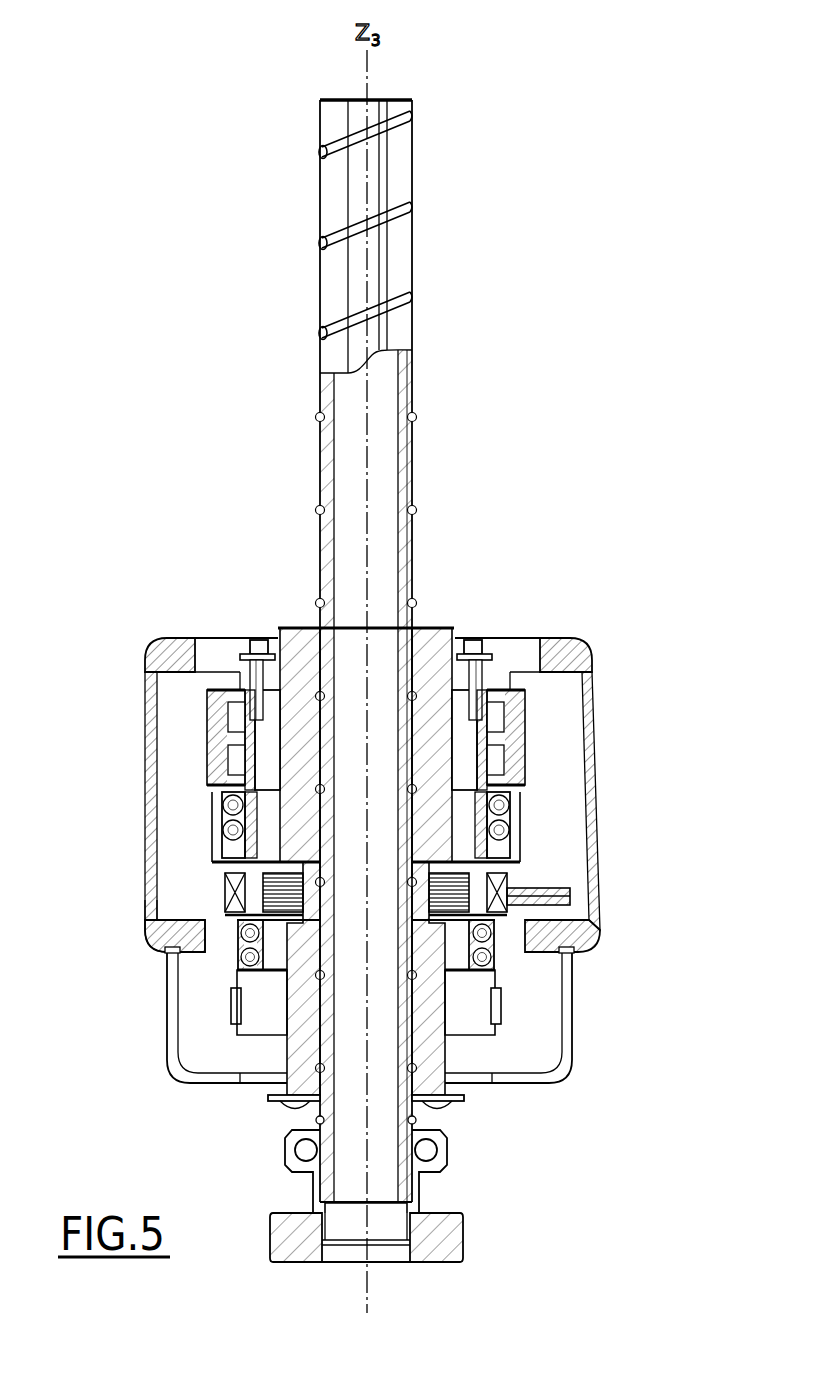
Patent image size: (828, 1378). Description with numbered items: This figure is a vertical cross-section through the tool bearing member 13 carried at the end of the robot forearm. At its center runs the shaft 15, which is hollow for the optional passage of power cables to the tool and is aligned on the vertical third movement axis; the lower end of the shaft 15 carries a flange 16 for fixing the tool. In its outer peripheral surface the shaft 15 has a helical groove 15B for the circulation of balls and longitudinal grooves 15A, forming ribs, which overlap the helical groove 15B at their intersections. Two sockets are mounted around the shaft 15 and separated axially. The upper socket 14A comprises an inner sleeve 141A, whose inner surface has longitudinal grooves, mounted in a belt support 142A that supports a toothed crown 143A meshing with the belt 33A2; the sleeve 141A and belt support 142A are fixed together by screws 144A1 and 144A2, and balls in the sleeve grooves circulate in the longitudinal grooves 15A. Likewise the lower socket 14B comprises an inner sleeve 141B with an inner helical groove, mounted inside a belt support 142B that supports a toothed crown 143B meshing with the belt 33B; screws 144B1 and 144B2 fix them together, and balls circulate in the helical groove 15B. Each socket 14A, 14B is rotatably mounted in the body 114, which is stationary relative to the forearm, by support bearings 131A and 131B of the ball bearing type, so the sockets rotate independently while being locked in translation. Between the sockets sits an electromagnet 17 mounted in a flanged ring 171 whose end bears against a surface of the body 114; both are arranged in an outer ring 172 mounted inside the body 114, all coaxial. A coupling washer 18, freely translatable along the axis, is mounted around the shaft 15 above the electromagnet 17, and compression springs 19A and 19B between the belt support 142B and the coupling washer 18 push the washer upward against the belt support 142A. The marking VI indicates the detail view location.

The tool bearing member 13 is at (467, 550).
The socket 14A is at (267, 829).
The inner sleeve 141A is at (298, 668).
The belt support 142A is at (265, 722).
The screw 144A1 is at (258, 650).
The screw 144A2 is at (482, 650).
The belt 33A2 is at (215, 712).
The toothed crown 143A is at (240, 748).
The elastic member 19A is at (225, 830).
The coupling washer 18 is at (230, 858).
The outer ring 172 is at (222, 880).
The electromagnet 17 is at (262, 893).
The flanged ring 171 is at (207, 928).
The support bearing 131A is at (510, 828).
The elastic member 19B is at (545, 895).
The support bearing 131B is at (500, 945).
The body 114 is at (518, 965).
The section line VI is at (170, 990).
The belt 33B is at (233, 1000).
The toothed crown 143B is at (257, 1020).
The screw 144B1 is at (286, 1102).
The screw 144B2 is at (440, 1103).
The inner sleeve 141B is at (427, 1058).
The belt support 142B is at (455, 1080).
The socket 14B is at (576, 1052).
The flange 16 is at (435, 1230).
The shaft 15 is at (397, 256).
The longitudinal grooves 15A is at (352, 95).
The helical groove 15B is at (317, 243).